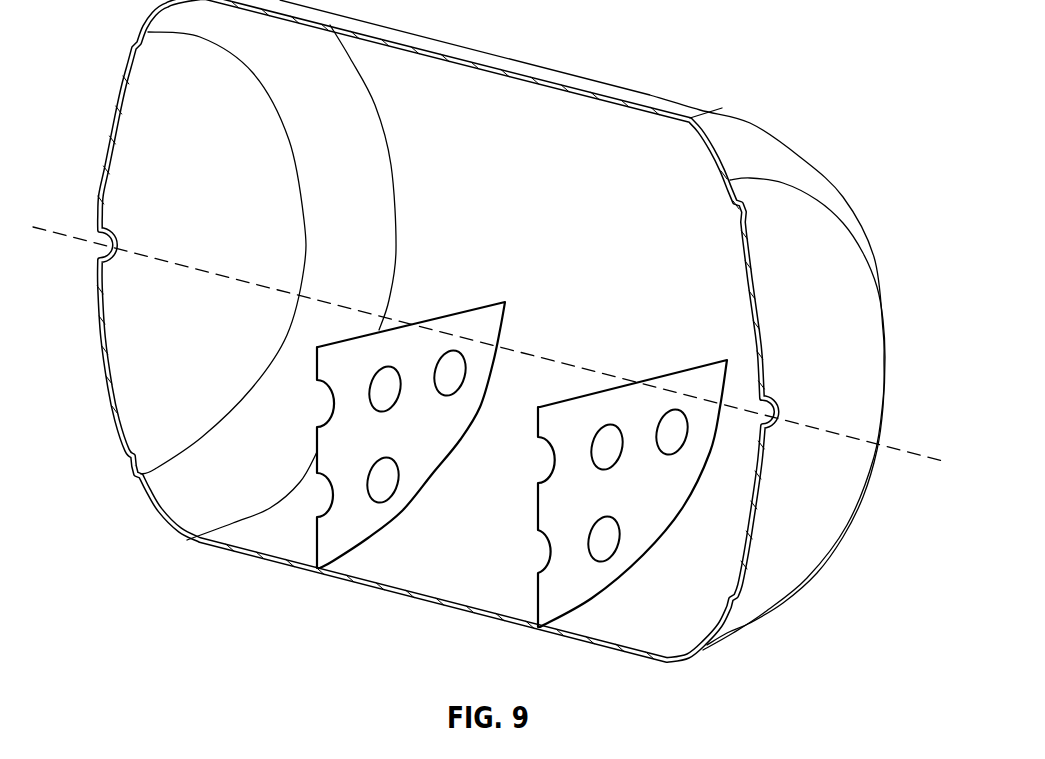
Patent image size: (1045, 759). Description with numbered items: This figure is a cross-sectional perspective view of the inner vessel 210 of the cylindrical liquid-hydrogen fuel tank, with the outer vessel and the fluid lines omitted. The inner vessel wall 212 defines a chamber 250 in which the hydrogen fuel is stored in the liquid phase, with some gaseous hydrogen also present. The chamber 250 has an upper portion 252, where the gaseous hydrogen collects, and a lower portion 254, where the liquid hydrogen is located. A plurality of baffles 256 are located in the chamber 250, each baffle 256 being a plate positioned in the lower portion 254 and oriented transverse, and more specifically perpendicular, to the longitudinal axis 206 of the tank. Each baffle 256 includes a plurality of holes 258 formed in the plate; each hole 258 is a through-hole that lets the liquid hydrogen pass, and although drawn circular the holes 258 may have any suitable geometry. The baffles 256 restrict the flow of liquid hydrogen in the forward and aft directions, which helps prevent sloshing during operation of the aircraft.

The longitudinal axis 206 is at (895, 450).
The inner vessel 210 is at (780, 163).
The inner vessel wall 212 is at (827, 247).
The chamber 250 is at (527, 499).
The upper portion 252 is at (177, 98).
The lower portion 254 is at (160, 498).
The baffle 256 is at (323, 550).
The hole 258 is at (453, 368).